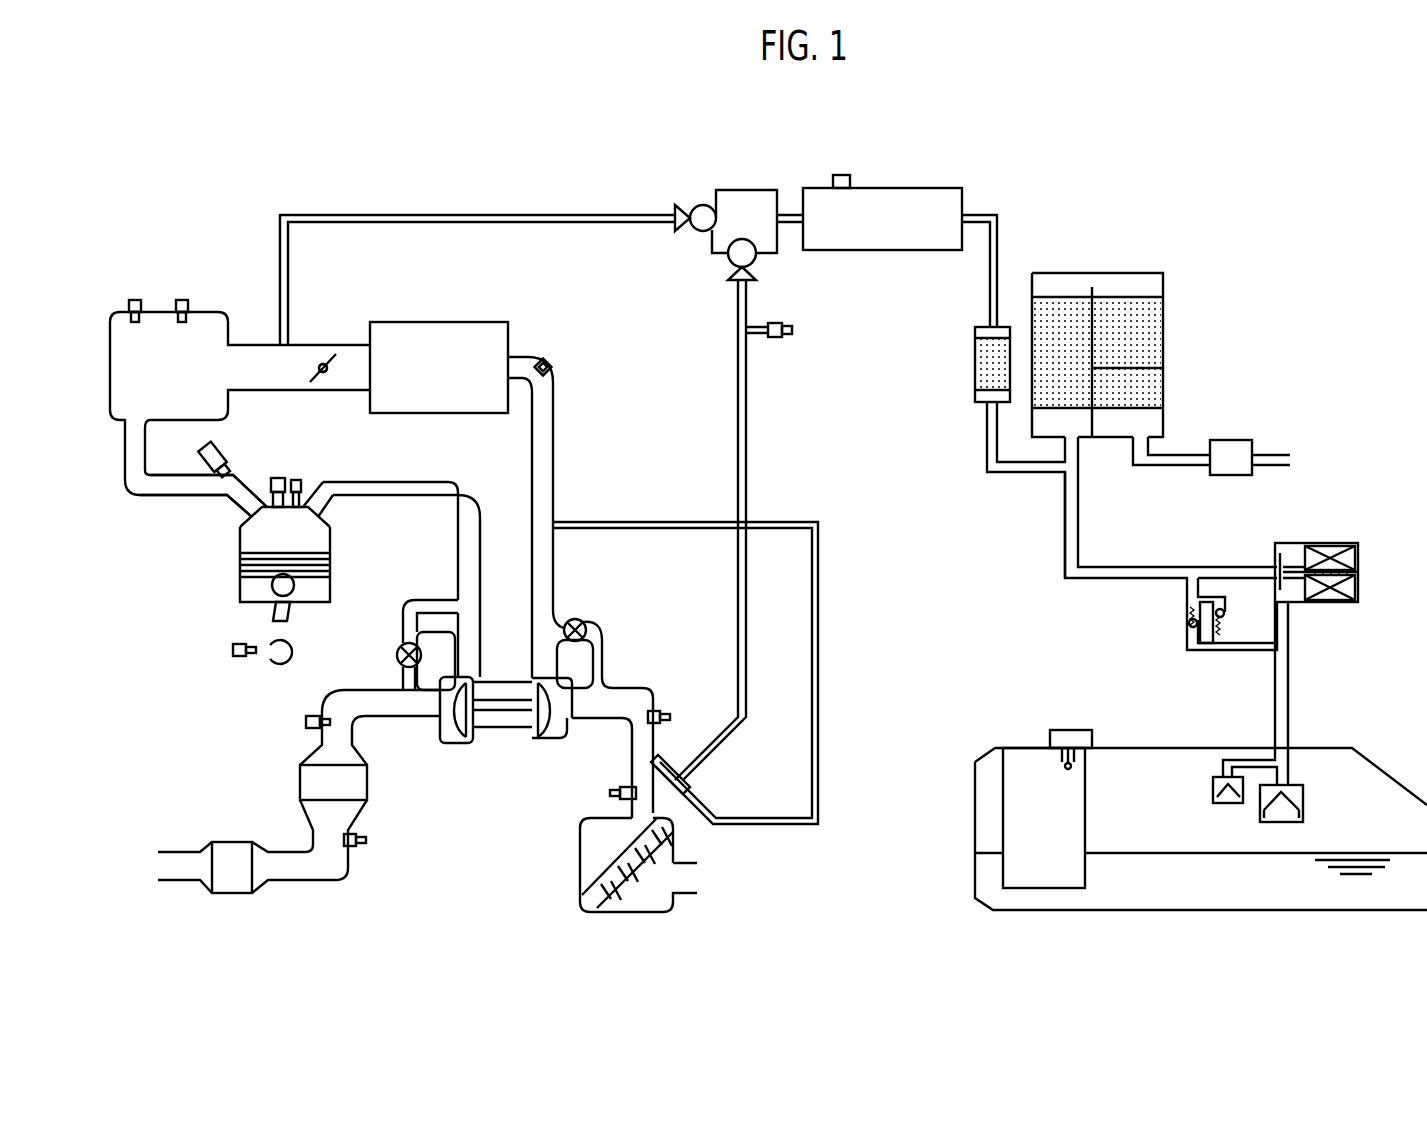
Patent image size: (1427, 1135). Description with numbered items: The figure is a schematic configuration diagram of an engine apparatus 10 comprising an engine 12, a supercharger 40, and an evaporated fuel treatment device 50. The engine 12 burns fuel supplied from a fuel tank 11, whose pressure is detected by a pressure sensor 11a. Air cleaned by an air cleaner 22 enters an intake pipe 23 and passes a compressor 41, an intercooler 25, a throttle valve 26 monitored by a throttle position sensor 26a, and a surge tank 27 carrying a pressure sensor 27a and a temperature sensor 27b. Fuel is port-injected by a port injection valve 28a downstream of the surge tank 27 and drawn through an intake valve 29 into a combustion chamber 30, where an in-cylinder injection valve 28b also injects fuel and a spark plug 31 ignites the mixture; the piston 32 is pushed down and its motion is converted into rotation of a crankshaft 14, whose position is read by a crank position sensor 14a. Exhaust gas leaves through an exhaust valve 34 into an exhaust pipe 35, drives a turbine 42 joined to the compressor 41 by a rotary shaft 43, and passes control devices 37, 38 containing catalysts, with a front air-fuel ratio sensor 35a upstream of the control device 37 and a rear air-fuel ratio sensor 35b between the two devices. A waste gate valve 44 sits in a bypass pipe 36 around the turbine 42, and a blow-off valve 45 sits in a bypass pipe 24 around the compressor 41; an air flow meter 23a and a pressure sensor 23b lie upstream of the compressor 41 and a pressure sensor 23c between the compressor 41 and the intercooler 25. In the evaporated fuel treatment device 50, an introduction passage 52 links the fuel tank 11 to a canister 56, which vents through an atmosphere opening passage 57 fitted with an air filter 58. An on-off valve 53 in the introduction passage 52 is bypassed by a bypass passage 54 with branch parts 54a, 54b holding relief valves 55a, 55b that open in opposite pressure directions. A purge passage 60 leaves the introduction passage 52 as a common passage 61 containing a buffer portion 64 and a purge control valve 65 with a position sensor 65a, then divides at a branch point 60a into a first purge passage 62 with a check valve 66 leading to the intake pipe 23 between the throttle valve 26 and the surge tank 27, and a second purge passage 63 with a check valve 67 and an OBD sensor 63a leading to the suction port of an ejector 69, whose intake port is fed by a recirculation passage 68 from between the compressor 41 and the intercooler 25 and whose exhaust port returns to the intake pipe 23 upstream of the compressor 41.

The engine apparatus 10 is at (1032, 122).
The fuel tank 11 is at (975, 818).
The pressure sensor 11a is at (1048, 736).
The engine 12 is at (238, 210).
The crankshaft 14 is at (270, 660).
The crank position sensor 14a is at (232, 650).
The air cleaner 22 is at (578, 866).
The intake pipe 23 is at (555, 470).
The air flow meter 23a is at (608, 793).
The pressure sensor 23b is at (660, 710).
The pressure sensor 23c is at (552, 358).
The bypass pipe 24 is at (604, 650).
The intercooler 25 is at (445, 322).
The throttle valve 26 is at (325, 355).
The throttle position sensor 26a is at (323, 378).
The surge tank 27 is at (232, 323).
The pressure sensor 27a is at (182, 298).
The temperature sensor 27b is at (135, 298).
The port injection valve 28a is at (208, 456).
The in-cylinder injection valve 28b is at (275, 478).
The intake valve 29 is at (243, 514).
The combustion chamber 30 is at (309, 540).
The spark plug 31 is at (300, 481).
The piston 32 is at (243, 591).
The exhaust valve 34 is at (320, 516).
The exhaust pipe 35 is at (388, 482).
The front air-fuel ratio sensor 35a is at (306, 722).
The rear air-fuel ratio sensor 35b is at (355, 848).
The bypass pipe 36 is at (407, 605).
The control device 37 is at (300, 780).
The control device 38 is at (232, 895).
The supercharger 40 is at (468, 780).
The compressor 41 is at (560, 725).
The turbine 42 is at (448, 735).
The rotary shaft 43 is at (503, 715).
The waste gate valve 44 is at (397, 655).
The blow-off valve 45 is at (578, 618).
The evaporated fuel treatment device 50 is at (1196, 236).
The introduction passage 52 is at (1128, 565).
The on-off valve 53 is at (1318, 543).
The bypass passage 54 is at (1187, 600).
The branch part 54a is at (1190, 615).
The branch part 54b is at (1225, 615).
The relief valve 55a is at (1190, 626).
The relief valve 55b is at (1225, 618).
The canister 56 is at (1100, 272).
The atmosphere opening passage 57 is at (1185, 468).
The air filter 58 is at (1234, 440).
The purge passage 60 is at (977, 208).
The branch point 60a is at (742, 190).
The common passage 61 is at (985, 432).
The first purge passage 62 is at (520, 214).
The second purge passage 63 is at (748, 400).
The OBD sensor 63a is at (795, 330).
The buffer portion 64 is at (975, 368).
The purge control valve 65 is at (910, 188).
The purge control valve position sensor 65a is at (842, 175).
The check valve 66 is at (697, 204).
The check valve 67 is at (758, 262).
The recirculation passage 68 is at (660, 521).
The ejector 69 is at (672, 775).